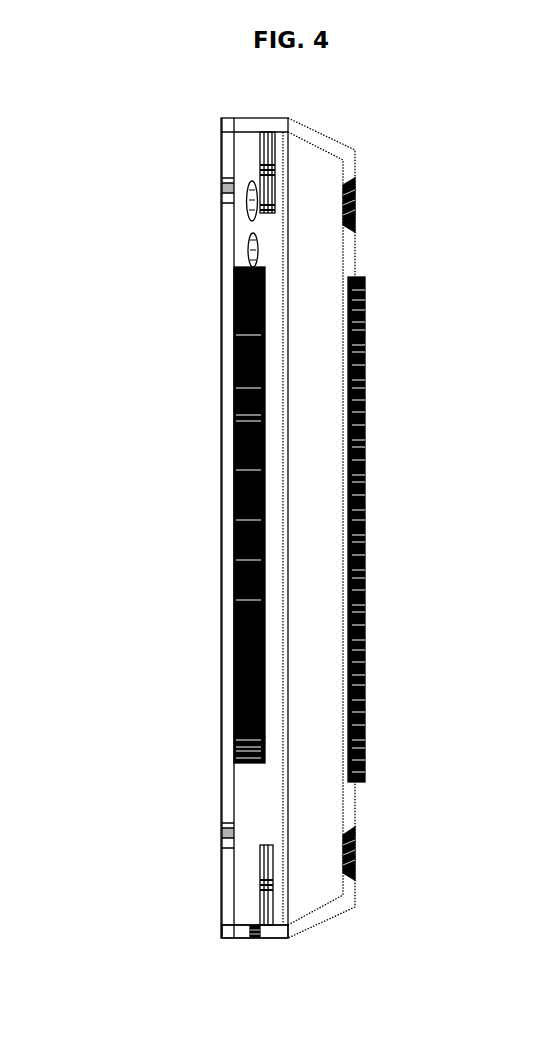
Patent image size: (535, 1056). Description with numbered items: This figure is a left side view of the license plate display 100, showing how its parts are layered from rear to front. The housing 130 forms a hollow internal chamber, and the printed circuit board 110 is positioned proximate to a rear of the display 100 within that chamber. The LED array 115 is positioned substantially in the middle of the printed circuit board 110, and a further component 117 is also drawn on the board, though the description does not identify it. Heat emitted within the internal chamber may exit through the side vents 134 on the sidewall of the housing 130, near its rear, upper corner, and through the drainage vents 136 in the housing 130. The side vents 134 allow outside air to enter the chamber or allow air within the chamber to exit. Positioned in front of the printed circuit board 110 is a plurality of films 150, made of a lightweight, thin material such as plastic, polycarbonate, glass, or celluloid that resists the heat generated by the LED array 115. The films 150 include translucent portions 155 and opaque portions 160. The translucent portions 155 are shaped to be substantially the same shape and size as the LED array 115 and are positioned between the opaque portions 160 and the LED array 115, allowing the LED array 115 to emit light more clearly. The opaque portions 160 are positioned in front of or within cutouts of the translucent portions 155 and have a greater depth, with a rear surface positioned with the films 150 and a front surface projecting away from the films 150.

The license plate display 100 is at (221, 118).
The printed circuit board 110 is at (228, 443).
The LED array 115 is at (234, 650).
The register chip 117 is at (235, 760).
The housing 130 is at (277, 928).
The side vents 134 is at (240, 243).
The drainage vents 136 is at (255, 938).
The films 150 is at (350, 803).
The translucent portions 155 is at (348, 277).
The opaque portions 160 is at (362, 580).